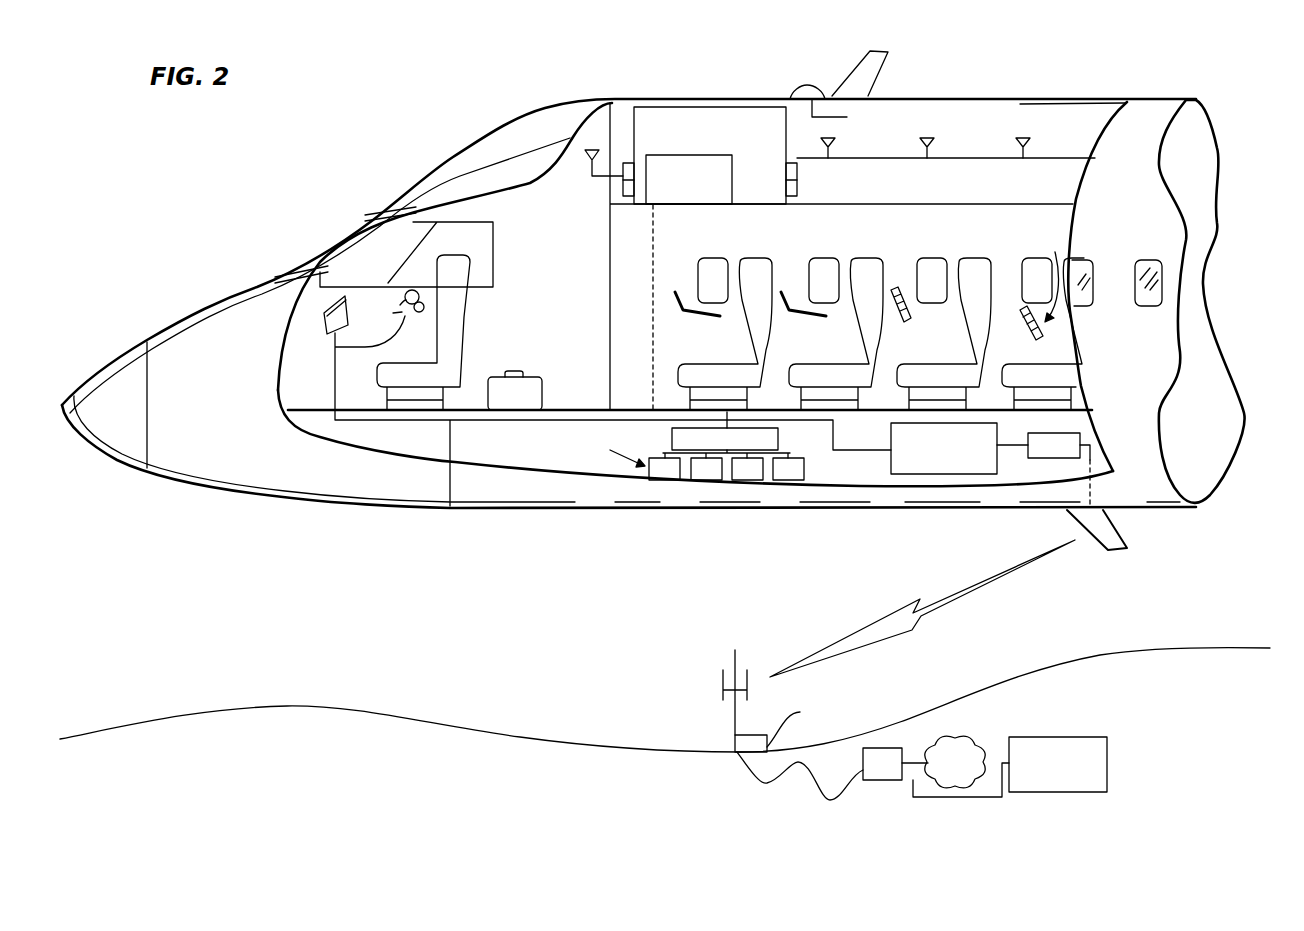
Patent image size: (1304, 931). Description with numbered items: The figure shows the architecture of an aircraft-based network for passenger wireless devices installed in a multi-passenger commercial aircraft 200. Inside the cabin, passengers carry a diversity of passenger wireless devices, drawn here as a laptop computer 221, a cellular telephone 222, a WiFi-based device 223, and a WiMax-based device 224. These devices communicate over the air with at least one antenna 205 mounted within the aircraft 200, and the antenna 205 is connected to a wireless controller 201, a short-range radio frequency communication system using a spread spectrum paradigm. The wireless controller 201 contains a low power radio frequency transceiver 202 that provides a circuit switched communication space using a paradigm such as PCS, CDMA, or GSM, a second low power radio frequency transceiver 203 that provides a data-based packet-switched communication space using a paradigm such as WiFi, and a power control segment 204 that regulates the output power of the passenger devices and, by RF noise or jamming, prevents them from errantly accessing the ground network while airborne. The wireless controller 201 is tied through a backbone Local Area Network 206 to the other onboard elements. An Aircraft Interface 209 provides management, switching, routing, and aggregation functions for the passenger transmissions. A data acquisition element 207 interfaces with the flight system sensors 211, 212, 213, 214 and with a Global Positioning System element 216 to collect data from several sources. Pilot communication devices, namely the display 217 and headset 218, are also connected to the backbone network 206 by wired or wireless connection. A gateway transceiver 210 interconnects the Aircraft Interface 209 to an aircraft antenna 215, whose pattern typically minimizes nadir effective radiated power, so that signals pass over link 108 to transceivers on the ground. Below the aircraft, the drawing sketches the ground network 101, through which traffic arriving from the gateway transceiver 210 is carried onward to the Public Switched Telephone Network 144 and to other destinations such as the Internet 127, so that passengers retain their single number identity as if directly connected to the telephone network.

The multi-passenger commercial aircraft 200 is at (195, 483).
The wireless controller 201 is at (628, 127).
The low power radio frequency transceiver 202 is at (798, 180).
The low power radio frequency transceiver 203 is at (620, 185).
The power control segment 204 is at (648, 203).
The antenna 205 is at (930, 148).
The Local Area Network 206 is at (450, 505).
The data acquisition element 207 is at (778, 440).
The Aircraft Interface 209 is at (965, 474).
The gateway transceiver 210 is at (1047, 458).
The flight system sensor 211 is at (657, 480).
The flight system sensor 212 is at (698, 480).
The flight system sensor 213 is at (742, 480).
The flight system sensor 214 is at (782, 480).
The antenna 215 is at (1125, 537).
The Global Positioning System element 216 is at (803, 90).
The display 217 is at (322, 318).
The headset 218 is at (402, 310).
The laptop computer 221 is at (786, 290).
The cellular telephone 222 is at (900, 292).
The WiFi-based device 223 is at (1040, 341).
The WiMax-based device 224 is at (680, 290).
The link 108 is at (963, 603).
The ground network 101 is at (723, 802).
The Public Switched Telephone Network 144 is at (973, 737).
The Internet 127 is at (1073, 737).